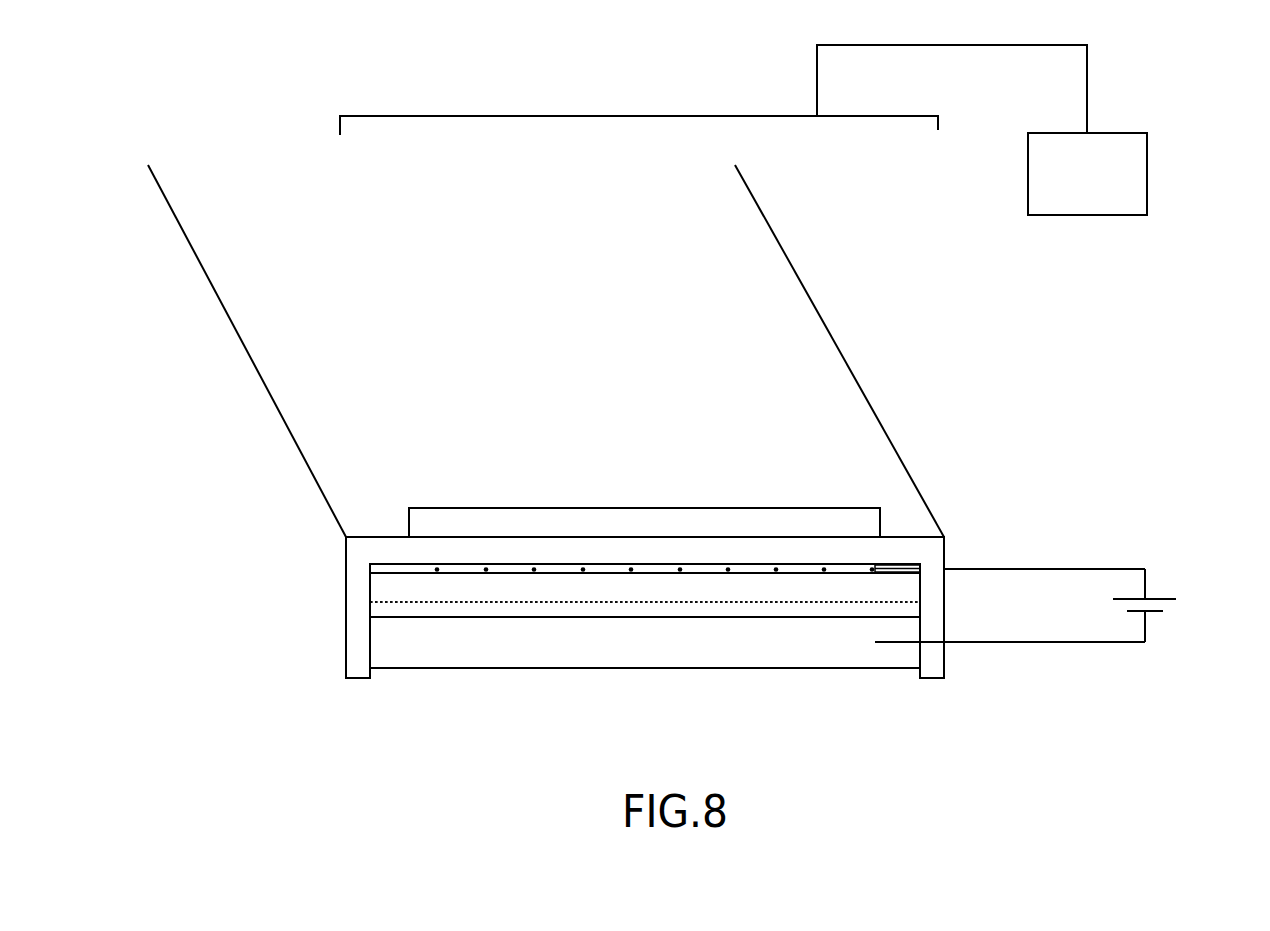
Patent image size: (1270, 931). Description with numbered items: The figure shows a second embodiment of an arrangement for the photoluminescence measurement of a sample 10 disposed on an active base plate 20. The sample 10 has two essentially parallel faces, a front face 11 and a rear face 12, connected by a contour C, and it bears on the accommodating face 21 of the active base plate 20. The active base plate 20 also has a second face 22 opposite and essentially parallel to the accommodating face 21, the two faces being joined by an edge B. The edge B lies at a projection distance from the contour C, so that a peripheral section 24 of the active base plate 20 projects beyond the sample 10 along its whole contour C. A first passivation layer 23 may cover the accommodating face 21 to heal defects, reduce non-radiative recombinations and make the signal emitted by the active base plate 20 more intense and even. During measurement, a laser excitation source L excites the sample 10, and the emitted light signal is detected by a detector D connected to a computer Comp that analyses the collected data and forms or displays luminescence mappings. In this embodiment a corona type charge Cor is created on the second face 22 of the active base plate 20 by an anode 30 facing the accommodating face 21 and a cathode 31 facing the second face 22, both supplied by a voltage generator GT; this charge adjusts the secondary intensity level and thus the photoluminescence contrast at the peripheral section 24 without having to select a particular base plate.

The sample 10 is at (447, 508).
The front face 11 is at (525, 520).
The rear face 12 is at (815, 537).
The active base plate 20 is at (418, 582).
The accommodating face 21 is at (888, 574).
The second face 22 is at (744, 592).
The first passivation layer 23 is at (945, 570).
The peripheral section 24 is at (913, 574).
The anode 30 is at (418, 568).
The cathode 31 is at (906, 650).
The edge B is at (372, 602).
The contour C is at (403, 524).
The detector D is at (340, 130).
The laser excitation source L is at (300, 448).
The corona type charge Cor is at (926, 602).
The voltage generator GT is at (1165, 605).
The computer Comp is at (1147, 185).